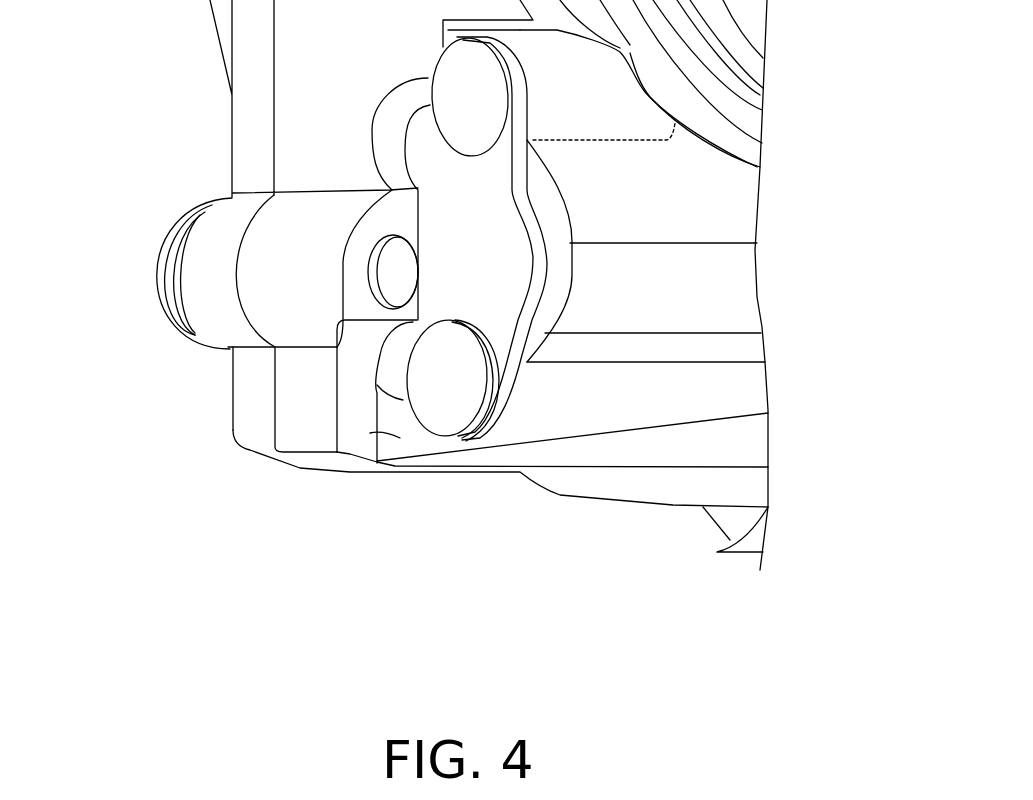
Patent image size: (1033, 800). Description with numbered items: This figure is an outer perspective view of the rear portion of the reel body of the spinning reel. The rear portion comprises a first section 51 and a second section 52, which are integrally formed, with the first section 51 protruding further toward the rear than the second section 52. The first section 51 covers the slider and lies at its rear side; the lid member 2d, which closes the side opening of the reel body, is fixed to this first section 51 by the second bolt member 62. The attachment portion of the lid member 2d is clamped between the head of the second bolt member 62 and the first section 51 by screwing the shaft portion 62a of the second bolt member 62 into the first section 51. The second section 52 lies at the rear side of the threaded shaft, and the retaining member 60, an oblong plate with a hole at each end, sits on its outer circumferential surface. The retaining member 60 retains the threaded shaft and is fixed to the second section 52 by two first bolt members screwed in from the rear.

The lid member 2d is at (247, 140).
The first section 51 is at (280, 298).
The second section 52 is at (355, 452).
The retaining member 60 is at (508, 277).
The second bolt member 62 is at (153, 275).
The shaft portion 62a is at (398, 282).